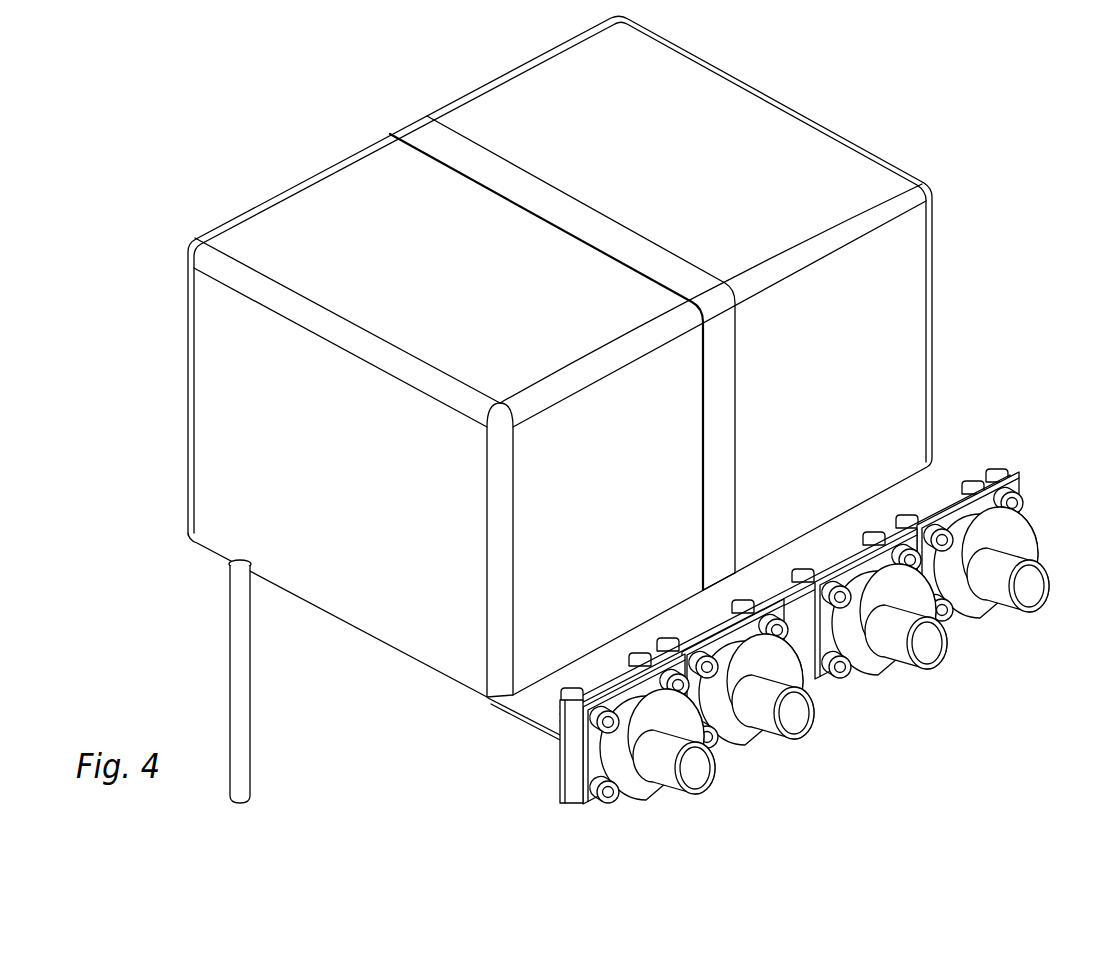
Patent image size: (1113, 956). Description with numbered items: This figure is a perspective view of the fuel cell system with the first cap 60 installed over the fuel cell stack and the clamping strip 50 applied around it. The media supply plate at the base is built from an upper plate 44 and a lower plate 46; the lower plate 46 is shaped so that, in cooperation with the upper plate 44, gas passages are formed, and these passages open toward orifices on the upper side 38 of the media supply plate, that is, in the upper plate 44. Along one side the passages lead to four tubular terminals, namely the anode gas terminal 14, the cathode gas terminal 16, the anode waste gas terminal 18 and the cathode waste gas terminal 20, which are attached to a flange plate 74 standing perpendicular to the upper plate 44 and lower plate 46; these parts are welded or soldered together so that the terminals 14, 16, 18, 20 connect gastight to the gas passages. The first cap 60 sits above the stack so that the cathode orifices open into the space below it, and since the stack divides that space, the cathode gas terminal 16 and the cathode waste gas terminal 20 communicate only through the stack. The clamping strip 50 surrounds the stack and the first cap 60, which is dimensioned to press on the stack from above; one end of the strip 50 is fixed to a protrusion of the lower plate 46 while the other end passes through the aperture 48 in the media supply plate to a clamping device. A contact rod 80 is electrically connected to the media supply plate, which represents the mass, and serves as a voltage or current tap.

The anode gas terminal 14 is at (933, 667).
The cathode gas terminal 16 is at (707, 787).
The anode waste gas terminal 18 is at (807, 727).
The cathode waste gas terminal 20 is at (1037, 613).
The upper side 38 is at (933, 484).
The upper plate 44 is at (517, 707).
The lower plate 46 is at (532, 723).
The aperture 48 is at (730, 583).
The fuel cell stack clamping element 50 is at (720, 498).
The first cap 60 is at (900, 268).
The flange plate 74 is at (570, 767).
The contact rod 80 is at (245, 718).